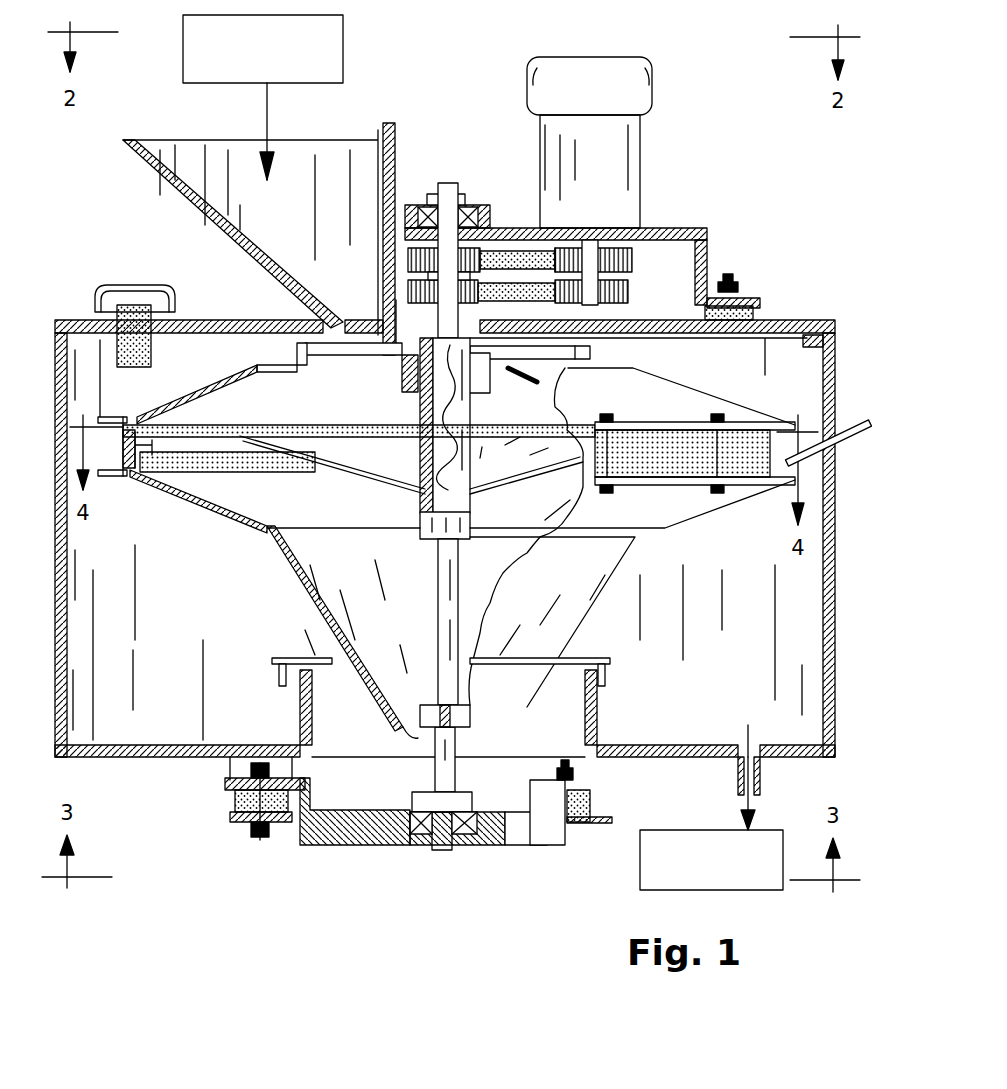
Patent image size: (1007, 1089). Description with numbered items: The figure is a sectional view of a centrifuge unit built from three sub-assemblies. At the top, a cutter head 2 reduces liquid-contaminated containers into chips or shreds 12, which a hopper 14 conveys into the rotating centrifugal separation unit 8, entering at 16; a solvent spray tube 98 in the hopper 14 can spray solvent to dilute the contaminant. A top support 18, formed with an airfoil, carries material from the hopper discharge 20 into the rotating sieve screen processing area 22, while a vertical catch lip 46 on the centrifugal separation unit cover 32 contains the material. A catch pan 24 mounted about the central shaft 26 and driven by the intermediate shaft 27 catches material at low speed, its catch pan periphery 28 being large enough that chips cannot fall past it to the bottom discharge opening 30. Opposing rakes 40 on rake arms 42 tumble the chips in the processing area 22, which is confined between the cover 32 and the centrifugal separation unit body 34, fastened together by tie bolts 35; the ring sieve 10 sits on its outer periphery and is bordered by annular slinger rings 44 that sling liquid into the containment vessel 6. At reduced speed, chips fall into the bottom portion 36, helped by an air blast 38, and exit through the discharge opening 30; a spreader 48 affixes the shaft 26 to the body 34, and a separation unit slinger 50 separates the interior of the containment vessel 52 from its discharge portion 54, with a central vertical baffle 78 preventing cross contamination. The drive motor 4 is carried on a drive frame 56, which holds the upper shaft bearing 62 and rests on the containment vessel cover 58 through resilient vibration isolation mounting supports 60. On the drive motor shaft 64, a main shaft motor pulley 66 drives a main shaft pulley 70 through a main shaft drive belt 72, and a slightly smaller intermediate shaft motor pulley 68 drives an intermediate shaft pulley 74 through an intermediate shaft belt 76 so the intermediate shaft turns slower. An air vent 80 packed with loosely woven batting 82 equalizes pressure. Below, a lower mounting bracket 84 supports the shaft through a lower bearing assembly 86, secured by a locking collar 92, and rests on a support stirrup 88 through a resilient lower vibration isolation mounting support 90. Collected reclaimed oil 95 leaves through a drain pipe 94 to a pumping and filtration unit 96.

The cutter head 2 is at (343, 47).
The drive motor 4 is at (645, 167).
The containment vessel 6 is at (833, 653).
The rotating centrifugal separation unit 8 is at (198, 508).
The ring sieve 10 is at (745, 440).
The chips or shreds 12 is at (267, 124).
The hopper 14 is at (258, 260).
The flow from hopper into separation unit 16 is at (340, 398).
The top support 18 is at (318, 383).
The hopper discharge 20 is at (345, 342).
The rotating sieve screen processing area 22 is at (170, 437).
The catch pan 24 is at (380, 493).
The central shaft 26 is at (433, 608).
The intermediate shaft 27 is at (470, 465).
The catch pan periphery 28 is at (237, 428).
The bottom discharge opening 30 is at (400, 737).
The centrifugal separation unit cover 32 is at (670, 381).
The centrifugal separation unit body 34 is at (247, 530).
The tie bolts 35 is at (610, 416).
The bottom portion of separation unit 36 is at (389, 654).
The air blast 38 is at (852, 442).
The rakes 40 is at (162, 472).
The rake arms 42 is at (245, 470).
The annular slinger rings 44 is at (115, 417).
The vertical catch lip 46 is at (590, 352).
The spreader 48 is at (412, 700).
The separation unit slinger 50 is at (285, 658).
The interior of containment vessel 52 is at (653, 652).
The discharge portion of containment vessel 54 is at (526, 552).
The drive frame 56 is at (707, 262).
The containment vessel cover 58 is at (800, 320).
The resilient vibration isolation mounting supports 60 is at (752, 312).
The upper shaft bearing 62 is at (465, 204).
The drive motor shaft 64 is at (592, 240).
The main shaft motor pulley 66 is at (632, 262).
The intermediate shaft motor pulley 68 is at (628, 292).
The main shaft pulley 70 is at (498, 250).
The main shaft drive belt 72 is at (548, 250).
The intermediate shaft pulley 74 is at (380, 288).
The intermediate shaft belt 76 is at (520, 305).
The central vertical baffle 78 is at (300, 716).
The containment vessel air vent 80 is at (122, 285).
The loosely woven batting 82 is at (150, 352).
The lower mounting bracket 84 is at (353, 847).
The lower bearing assembly 86 is at (458, 846).
The support stirrup 88 is at (236, 825).
The resilient lower vibration isolation mounting support 90 is at (232, 803).
The locking collar 92 is at (418, 792).
The drain pipe 94 is at (738, 782).
The reclaimed oil 95 is at (769, 736).
The pumping and filtration unit 96 is at (640, 878).
The solvent spray tube 98 is at (392, 129).